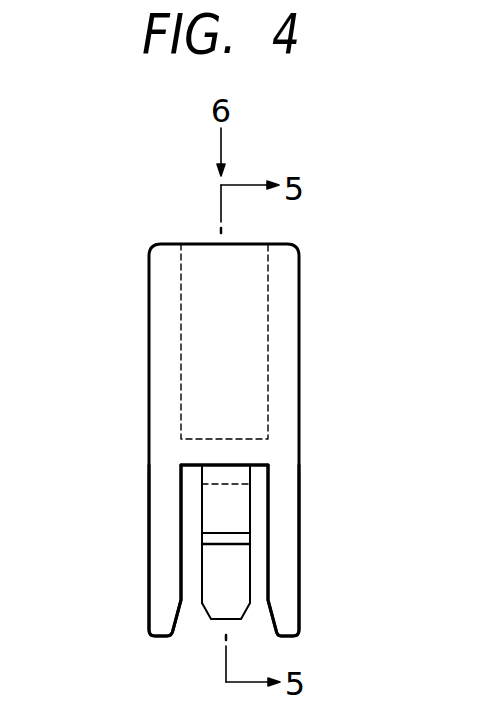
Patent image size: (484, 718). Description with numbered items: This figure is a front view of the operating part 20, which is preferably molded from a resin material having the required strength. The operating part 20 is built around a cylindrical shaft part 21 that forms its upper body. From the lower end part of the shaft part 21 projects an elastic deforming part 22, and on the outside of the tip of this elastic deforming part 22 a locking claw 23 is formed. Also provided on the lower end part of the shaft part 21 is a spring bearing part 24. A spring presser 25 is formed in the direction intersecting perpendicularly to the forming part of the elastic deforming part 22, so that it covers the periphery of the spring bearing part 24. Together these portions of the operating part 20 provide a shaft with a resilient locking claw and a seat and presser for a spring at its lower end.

The operating part 20 is at (301, 356).
The cylindrical shaft part 21 is at (294, 397).
The elastic deforming part 22 is at (250, 496).
The locking claw 23 is at (242, 583).
The spring bearing part 24 is at (192, 467).
The spring presser 25 is at (157, 566).